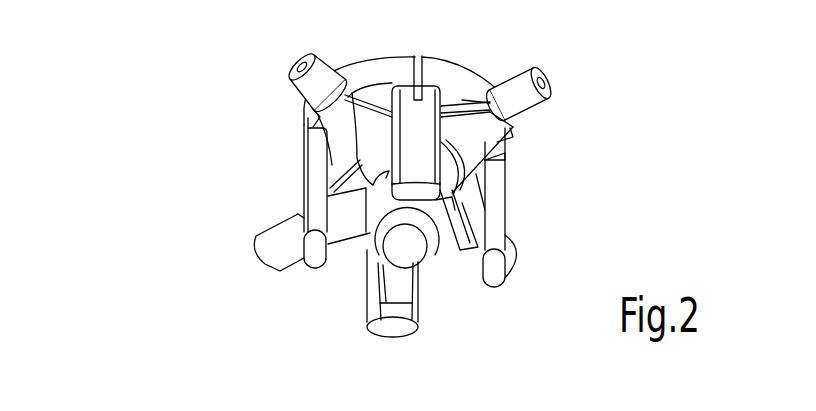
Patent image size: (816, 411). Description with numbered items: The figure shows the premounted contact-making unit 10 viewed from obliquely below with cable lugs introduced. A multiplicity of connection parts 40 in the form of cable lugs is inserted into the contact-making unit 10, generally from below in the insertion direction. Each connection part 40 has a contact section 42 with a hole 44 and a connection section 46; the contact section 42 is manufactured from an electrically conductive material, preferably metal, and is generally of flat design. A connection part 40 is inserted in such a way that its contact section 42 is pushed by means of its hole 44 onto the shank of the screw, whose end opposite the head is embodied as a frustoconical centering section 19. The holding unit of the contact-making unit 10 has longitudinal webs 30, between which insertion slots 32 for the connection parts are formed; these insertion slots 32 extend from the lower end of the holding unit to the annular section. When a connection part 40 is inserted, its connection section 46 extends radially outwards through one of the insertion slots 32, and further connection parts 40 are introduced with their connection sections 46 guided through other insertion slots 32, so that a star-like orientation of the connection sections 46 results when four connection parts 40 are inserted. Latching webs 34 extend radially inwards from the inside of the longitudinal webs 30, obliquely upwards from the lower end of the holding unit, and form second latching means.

The contact-making unit 10 is at (483, 57).
The centering section 19 is at (431, 230).
The longitudinal webs 30 is at (307, 177).
The insertion slots 32 is at (317, 160).
The latching webs 34 is at (336, 268).
The connection parts 40 is at (300, 112).
The contact section 42 is at (381, 117).
The hole 44 is at (351, 95).
The connection section 46 is at (283, 237).